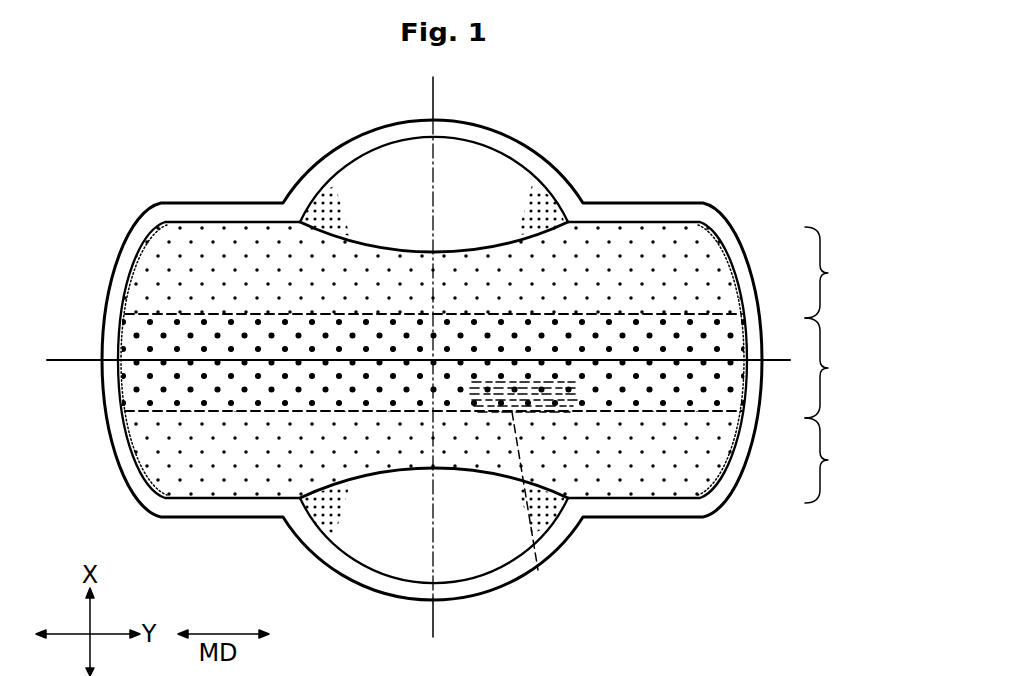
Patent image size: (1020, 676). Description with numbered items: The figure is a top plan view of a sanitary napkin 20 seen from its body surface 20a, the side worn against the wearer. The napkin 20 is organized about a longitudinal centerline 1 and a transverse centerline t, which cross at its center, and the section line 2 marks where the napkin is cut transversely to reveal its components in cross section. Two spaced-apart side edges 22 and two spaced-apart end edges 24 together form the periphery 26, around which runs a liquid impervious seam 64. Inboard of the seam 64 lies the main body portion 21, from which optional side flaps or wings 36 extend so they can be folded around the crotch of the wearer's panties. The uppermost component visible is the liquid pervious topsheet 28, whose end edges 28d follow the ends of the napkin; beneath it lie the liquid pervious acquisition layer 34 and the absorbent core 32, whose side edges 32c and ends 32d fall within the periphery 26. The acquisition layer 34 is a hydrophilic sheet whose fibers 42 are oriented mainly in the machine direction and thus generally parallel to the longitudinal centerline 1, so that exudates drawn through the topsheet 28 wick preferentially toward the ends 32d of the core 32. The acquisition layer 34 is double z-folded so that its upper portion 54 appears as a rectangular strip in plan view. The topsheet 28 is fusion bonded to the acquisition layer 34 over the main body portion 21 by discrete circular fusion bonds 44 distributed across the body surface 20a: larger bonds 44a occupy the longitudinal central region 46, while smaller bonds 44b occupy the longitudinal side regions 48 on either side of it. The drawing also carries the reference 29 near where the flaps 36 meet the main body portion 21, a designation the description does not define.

The longitudinal centerline 1 is at (773, 363).
The section line 2 is at (433, 77).
The transverse centerline t is at (433, 100).
The sanitary napkin 20 is at (508, 122).
The body surface 20a is at (620, 248).
The main body portion 21 is at (168, 253).
The side edges 22 is at (252, 200).
The end edges 24 is at (100, 390).
The periphery 26 is at (648, 520).
The topsheet 28 is at (687, 477).
The topsheet end edges 28d is at (133, 223).
The end region 29 is at (343, 185).
The absorbent core 32 is at (170, 463).
The absorbent core side edges 32c is at (583, 247).
The absorbent core ends 32d is at (127, 418).
The acquisition layer 34 is at (725, 330).
The side flaps 36 is at (510, 187).
The fibers 42 is at (537, 503).
The fusion bonds 44 is at (140, 295).
The larger bonds 44a is at (150, 345).
The small bonds 44b is at (212, 240).
The longitudinal central region 46 is at (492, 367).
The longitudinal side regions 48 is at (834, 365).
The upper portion 54 is at (720, 393).
The seam 64 is at (128, 478).